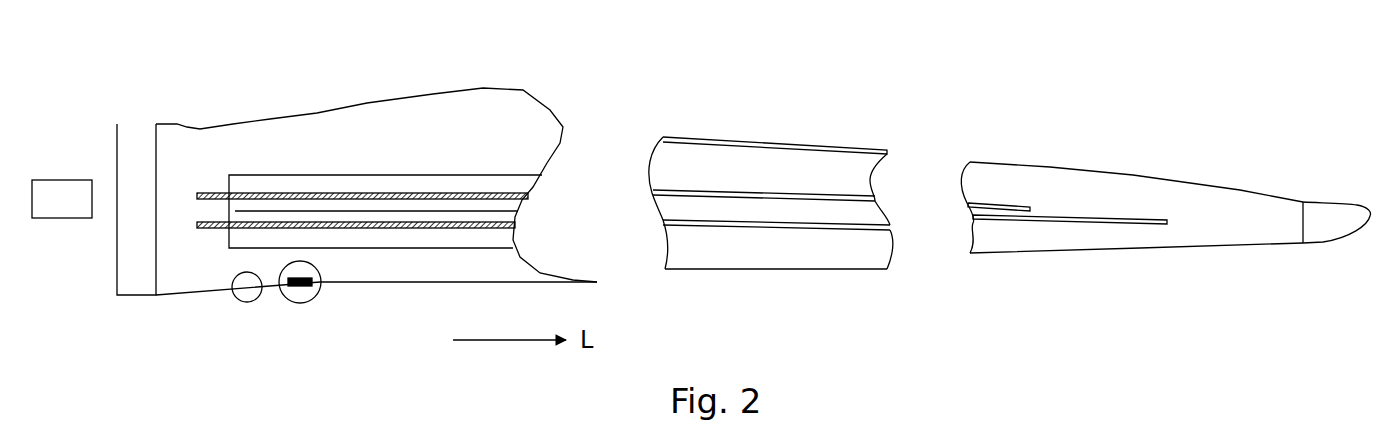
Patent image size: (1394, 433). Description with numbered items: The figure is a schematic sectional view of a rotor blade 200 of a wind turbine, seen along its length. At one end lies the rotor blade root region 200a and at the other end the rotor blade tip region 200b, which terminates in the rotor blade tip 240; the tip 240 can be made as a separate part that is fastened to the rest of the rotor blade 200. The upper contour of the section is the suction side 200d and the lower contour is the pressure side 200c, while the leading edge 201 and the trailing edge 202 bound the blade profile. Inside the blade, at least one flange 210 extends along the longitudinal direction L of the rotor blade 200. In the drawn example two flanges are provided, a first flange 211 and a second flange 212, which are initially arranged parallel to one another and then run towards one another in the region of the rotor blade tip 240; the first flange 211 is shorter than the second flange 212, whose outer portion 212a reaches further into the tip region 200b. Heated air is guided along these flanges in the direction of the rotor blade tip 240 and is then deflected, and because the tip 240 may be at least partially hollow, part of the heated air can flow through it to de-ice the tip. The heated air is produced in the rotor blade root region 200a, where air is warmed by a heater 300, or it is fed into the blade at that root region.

The rotor blade 200 is at (716, 103).
The rotor blade root region 200a is at (113, 163).
The rotor blade tip region 200b is at (1198, 178).
The pressure side 200c is at (369, 270).
The suction side 200d is at (291, 98).
The leading edge 201 is at (442, 268).
The trailing edge 202 is at (392, 132).
The flange 210 is at (490, 223).
The first flange 211 is at (753, 192).
The second flange 212 is at (815, 227).
The second layer end portion 212a is at (1160, 217).
The rotor blade tip 240 is at (1327, 203).
The heater 300 is at (164, 209).